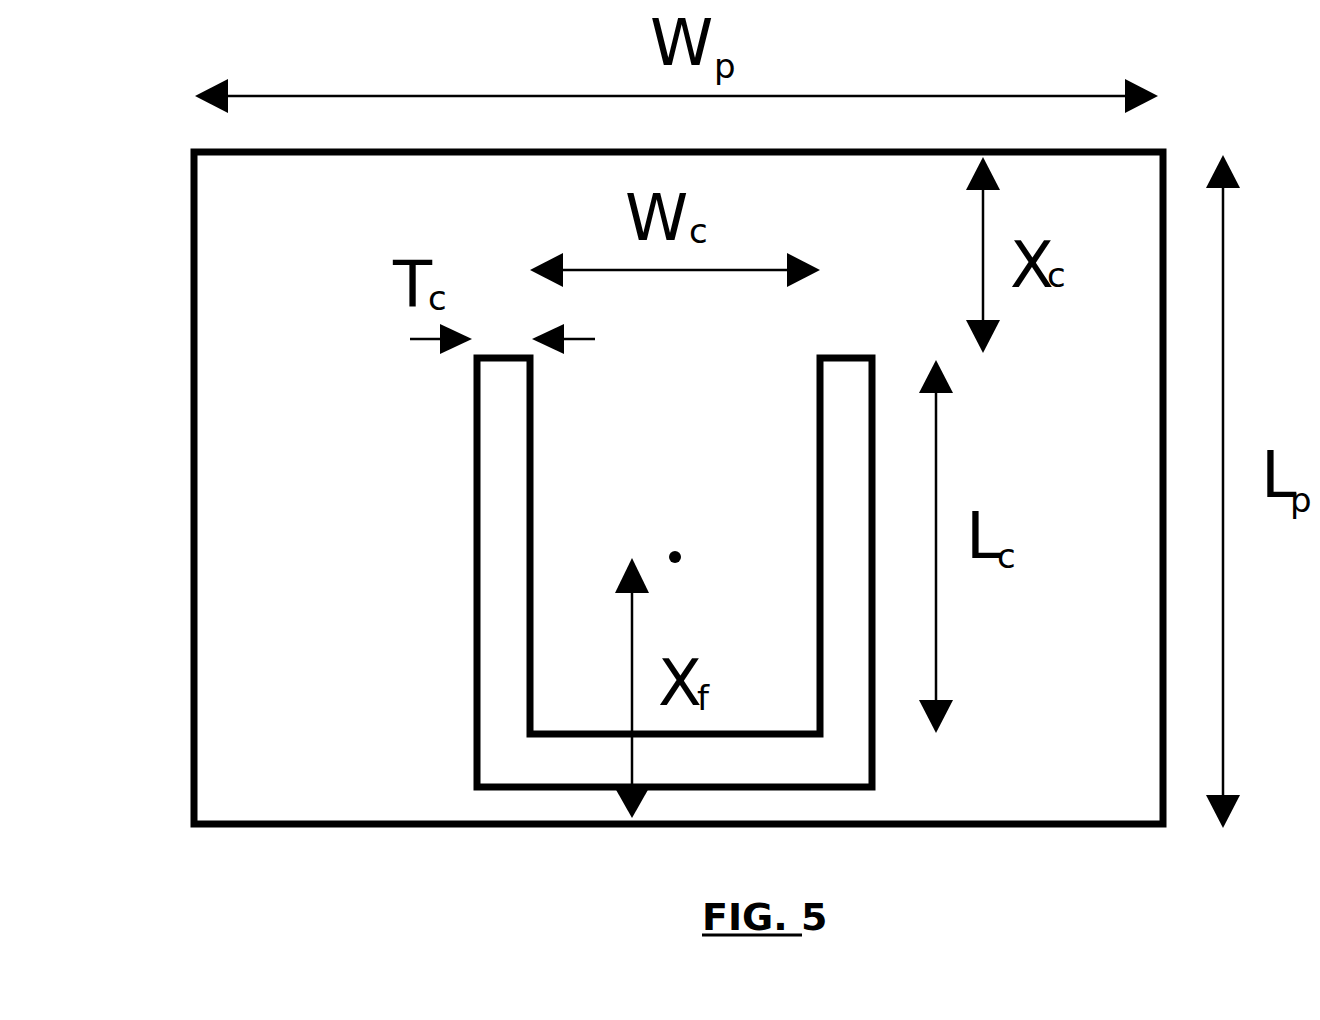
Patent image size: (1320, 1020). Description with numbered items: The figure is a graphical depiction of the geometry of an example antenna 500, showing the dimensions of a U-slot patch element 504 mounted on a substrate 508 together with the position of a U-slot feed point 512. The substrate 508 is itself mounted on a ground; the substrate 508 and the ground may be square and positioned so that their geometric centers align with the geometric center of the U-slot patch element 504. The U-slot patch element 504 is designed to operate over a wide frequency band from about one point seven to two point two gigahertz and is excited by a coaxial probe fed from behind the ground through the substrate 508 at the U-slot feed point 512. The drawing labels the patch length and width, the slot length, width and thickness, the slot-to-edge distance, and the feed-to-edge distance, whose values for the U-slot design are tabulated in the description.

The antenna 500 is at (174, 66).
The U-slot patch element 504 is at (475, 565).
The substrate 508 is at (191, 292).
The U-slot feed point 512 is at (670, 555).